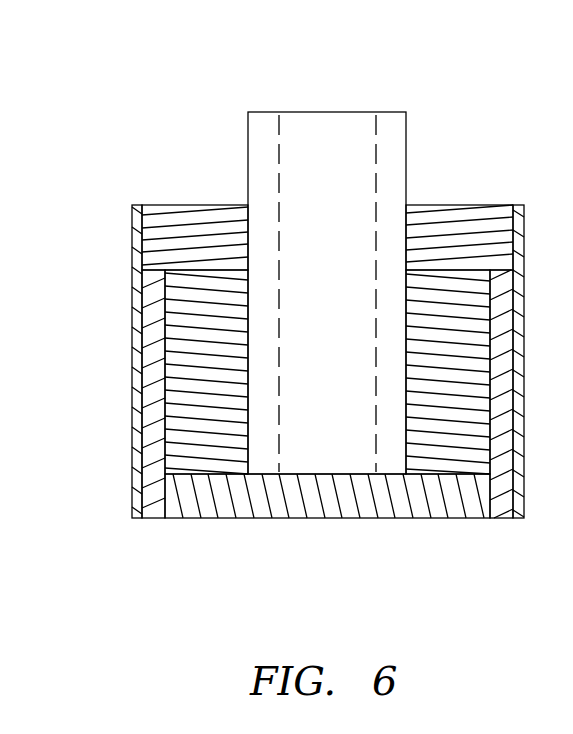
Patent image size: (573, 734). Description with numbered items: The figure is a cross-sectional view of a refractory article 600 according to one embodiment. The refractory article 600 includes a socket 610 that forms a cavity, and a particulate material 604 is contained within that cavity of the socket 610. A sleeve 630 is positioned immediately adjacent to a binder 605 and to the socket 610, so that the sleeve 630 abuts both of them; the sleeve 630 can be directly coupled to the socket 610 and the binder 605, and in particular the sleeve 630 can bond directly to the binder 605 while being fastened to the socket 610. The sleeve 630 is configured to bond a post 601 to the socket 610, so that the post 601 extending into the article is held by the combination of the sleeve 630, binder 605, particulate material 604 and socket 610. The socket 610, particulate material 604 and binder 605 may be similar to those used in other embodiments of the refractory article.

The refractory article 600 is at (104, 69).
The post 601 is at (409, 133).
The binder 605 is at (209, 205).
The particulate material 604 is at (193, 322).
The sleeve 630 is at (131, 384).
The socket 610 is at (141, 457).